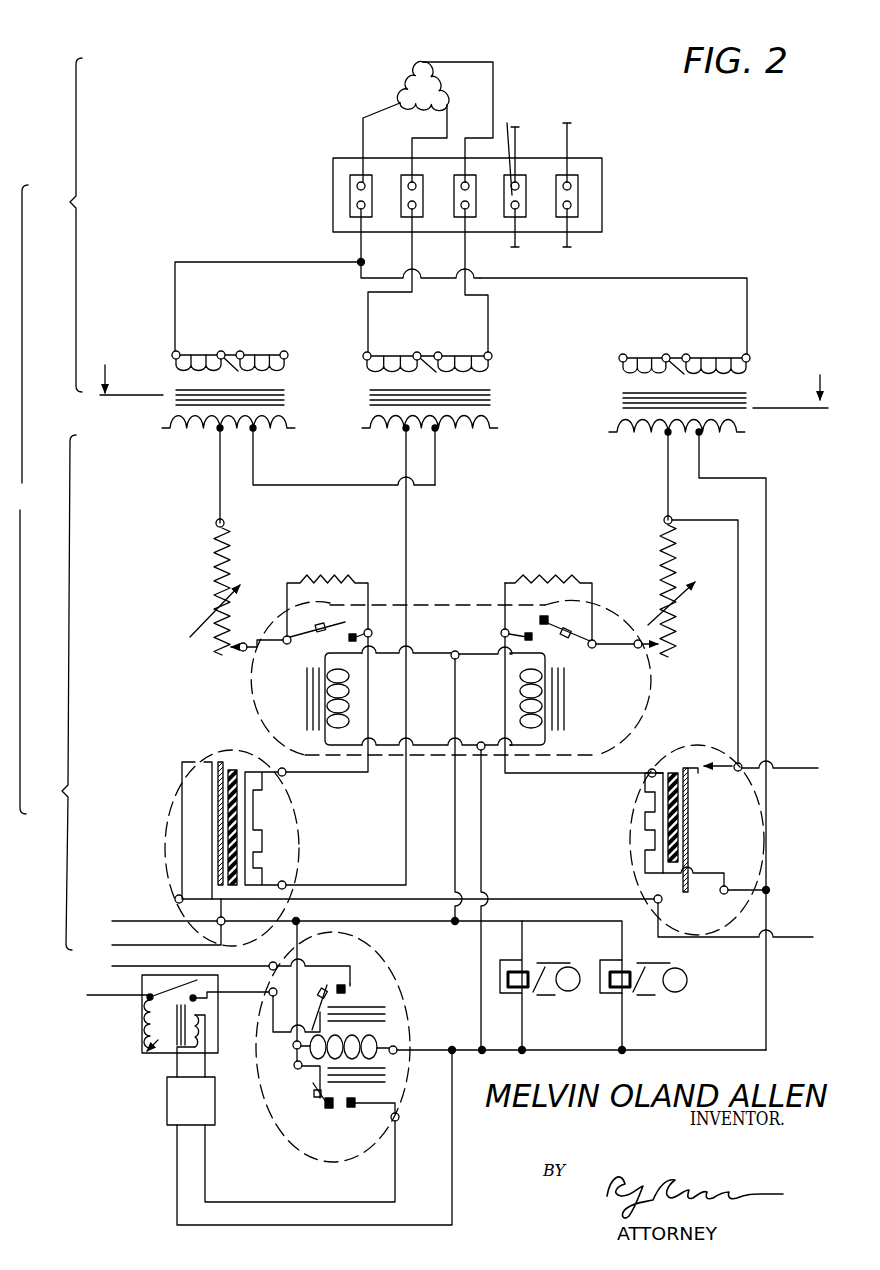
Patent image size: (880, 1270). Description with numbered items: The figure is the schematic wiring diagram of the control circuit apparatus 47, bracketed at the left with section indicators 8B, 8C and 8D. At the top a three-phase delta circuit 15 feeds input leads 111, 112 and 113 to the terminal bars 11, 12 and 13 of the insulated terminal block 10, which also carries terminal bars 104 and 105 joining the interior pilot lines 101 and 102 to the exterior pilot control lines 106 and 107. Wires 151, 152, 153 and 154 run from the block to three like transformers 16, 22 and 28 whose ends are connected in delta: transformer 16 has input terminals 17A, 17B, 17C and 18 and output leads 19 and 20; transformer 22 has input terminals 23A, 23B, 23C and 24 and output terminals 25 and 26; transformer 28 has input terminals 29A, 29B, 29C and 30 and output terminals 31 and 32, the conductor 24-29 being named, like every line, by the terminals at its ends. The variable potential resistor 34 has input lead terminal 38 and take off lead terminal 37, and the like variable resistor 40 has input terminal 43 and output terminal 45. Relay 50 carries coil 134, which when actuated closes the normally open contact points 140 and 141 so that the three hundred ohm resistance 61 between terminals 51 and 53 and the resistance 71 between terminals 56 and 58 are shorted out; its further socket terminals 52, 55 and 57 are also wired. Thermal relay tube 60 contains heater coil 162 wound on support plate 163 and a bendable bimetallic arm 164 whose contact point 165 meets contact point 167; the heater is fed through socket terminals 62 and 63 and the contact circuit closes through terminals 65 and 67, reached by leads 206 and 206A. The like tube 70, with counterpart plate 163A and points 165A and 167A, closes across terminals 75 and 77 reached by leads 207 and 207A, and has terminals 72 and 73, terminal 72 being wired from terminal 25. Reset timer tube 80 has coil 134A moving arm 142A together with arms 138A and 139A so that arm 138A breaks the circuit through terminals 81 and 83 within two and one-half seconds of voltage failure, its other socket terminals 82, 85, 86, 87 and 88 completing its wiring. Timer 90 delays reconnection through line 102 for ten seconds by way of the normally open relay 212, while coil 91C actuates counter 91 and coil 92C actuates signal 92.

The section line 8B is at (464, 386).
The section bracket 8C is at (59, 225).
The section bracket 8D is at (49, 692).
The terminal block 10 is at (604, 170).
The terminal bar 11 is at (352, 195).
The terminal bar 12 is at (414, 209).
The terminal bar 13 is at (467, 208).
The delta circuit 15 is at (396, 82).
The transformer 16 is at (168, 420).
The input terminal 17A is at (173, 353).
The input terminal 17B is at (222, 351).
The input terminal 17C is at (243, 352).
The input terminal 18 is at (287, 352).
The output lead 19 is at (219, 460).
The output lead 20 is at (256, 455).
The transformer 22 is at (495, 420).
The input terminal 23A is at (369, 352).
The input terminal 23B is at (418, 352).
The input terminal 23C is at (441, 352).
The input terminal 24 is at (491, 353).
The connecting conductor 24-29 is at (598, 360).
The output terminal 25 is at (405, 462).
The output terminal 26 is at (437, 455).
The transformer 28 is at (737, 422).
The input terminal 29A is at (624, 354).
The input terminal 29B is at (666, 354).
The input terminal 29C is at (689, 354).
The input terminal 30 is at (750, 358).
The output terminal 31 is at (667, 465).
The output terminal 32 is at (703, 457).
The variable potential resistor 34 is at (222, 593).
The take off lead terminal 37 is at (244, 643).
The input lead terminal 38 is at (217, 525).
The variable resistor 40 is at (677, 621).
The input terminal 43 is at (671, 520).
The output terminal 45 is at (640, 649).
The control circuit apparatus 47 is at (20, 499).
The relay 50 is at (464, 604).
The terminal 51 is at (593, 648).
The relay terminal 52 is at (481, 742).
The terminal 53 is at (502, 632).
The relay coil 55 is at (306, 684).
The terminal 56 is at (372, 632).
The relay terminal 57 is at (455, 651).
The terminal 58 is at (289, 636).
The thermal relay tube 60 is at (629, 881).
The resistance 61 is at (545, 578).
The socket terminal 62 is at (728, 887).
The socket terminal 63 is at (650, 771).
The terminal 65 is at (748, 754).
The terminal 67 is at (655, 902).
The thermal relay tube 70 is at (166, 855).
The resistance 71 is at (314, 577).
The terminal 72 is at (286, 884).
The relay terminal 73 is at (299, 774).
The terminal 75 is at (176, 899).
The terminal 77 is at (226, 920).
The reset timer tube 80 is at (411, 990).
The terminal 81 is at (269, 995).
The relay terminal 82 is at (398, 1046).
The terminal 83 is at (269, 966).
The relay core 85 is at (388, 1077).
The relay terminal 86 is at (391, 1120).
The relay terminal 87 is at (293, 1050).
The relay terminal 88 is at (296, 1069).
The timer 90 is at (215, 1114).
The counter 91 is at (684, 992).
The coil 91C is at (626, 990).
The signal 92 is at (567, 964).
The coil 92C is at (518, 989).
The interior pilot line 101 is at (572, 243).
The interior pilot line 102 is at (518, 243).
The terminal bar 104 is at (572, 199).
The terminal bar 105 is at (513, 150).
The exterior pilot control line 106 is at (517, 136).
The exterior pilot control line 107 is at (570, 130).
The input lead 111 is at (360, 137).
The input lead 112 is at (447, 124).
The input lead 113 is at (493, 62).
The coil 134 is at (280, 714).
The coil 134A is at (348, 1046).
The arm 138A is at (346, 967).
The arm 139A is at (327, 1108).
The contact point 140 is at (549, 618).
The contact point 141 is at (347, 622).
The arm 142A is at (313, 965).
The wire 151 is at (272, 262).
The wire 152 is at (366, 310).
The wire 153 is at (488, 312).
The wire 154 is at (656, 283).
The heater coil 162 is at (648, 838).
The heater coil support plate 163 is at (650, 824).
The relay core 163A is at (238, 826).
The bimetallic arm 164 is at (690, 832).
The contact point 165 is at (697, 766).
The contact point 165A is at (219, 759).
The contact point 167 is at (745, 778).
The contact point 167A is at (196, 762).
The lead 206 is at (803, 770).
The lead 206A is at (793, 940).
The lead 207 is at (123, 920).
The lead 207A is at (136, 944).
The relay 212 is at (159, 1051).